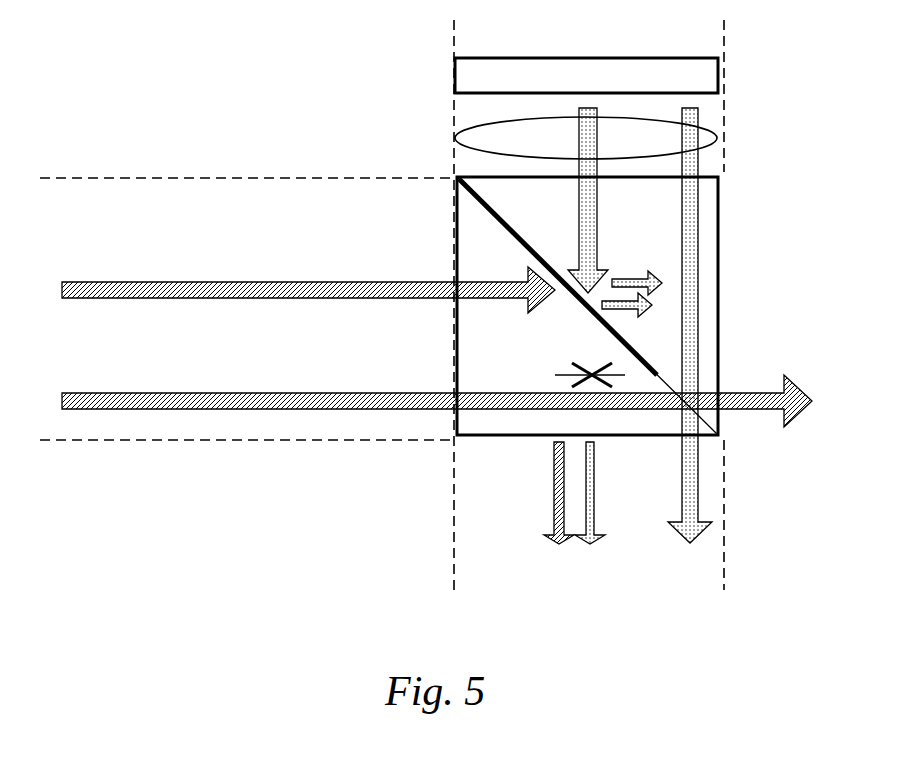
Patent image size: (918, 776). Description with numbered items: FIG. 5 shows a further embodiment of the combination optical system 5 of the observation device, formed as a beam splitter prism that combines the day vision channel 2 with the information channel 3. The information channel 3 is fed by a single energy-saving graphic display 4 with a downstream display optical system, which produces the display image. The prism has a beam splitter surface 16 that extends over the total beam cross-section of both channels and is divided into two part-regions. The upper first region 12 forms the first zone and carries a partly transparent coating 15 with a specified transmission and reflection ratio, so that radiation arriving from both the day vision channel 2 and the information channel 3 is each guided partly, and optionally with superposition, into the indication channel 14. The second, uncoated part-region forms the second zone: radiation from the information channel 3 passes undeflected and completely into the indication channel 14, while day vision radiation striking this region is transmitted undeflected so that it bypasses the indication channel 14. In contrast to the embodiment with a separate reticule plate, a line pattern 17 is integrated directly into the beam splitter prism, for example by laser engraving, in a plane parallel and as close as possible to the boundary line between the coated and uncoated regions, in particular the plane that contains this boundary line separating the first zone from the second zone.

The day vision channel 2 is at (382, 305).
The information channel 3 is at (633, 136).
The graphic display 4 is at (628, 72).
The combination optical system 5 is at (634, 306).
The first region 12 is at (414, 257).
The indication channel 14 is at (322, 492).
The partly transparent coating 15 is at (478, 204).
The beam splitter surface 16 is at (653, 335).
The line pattern 17 is at (513, 360).